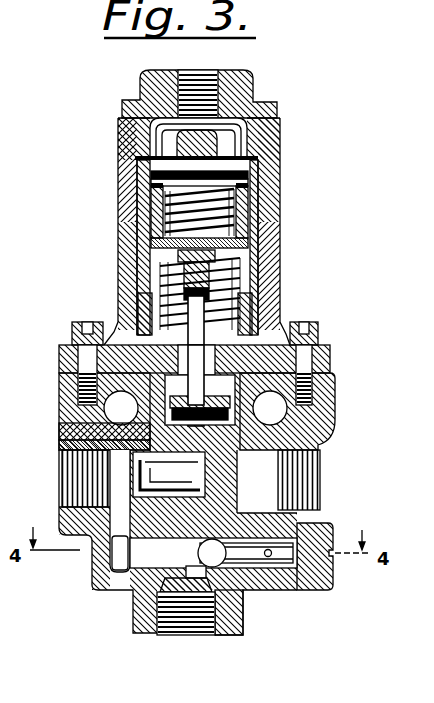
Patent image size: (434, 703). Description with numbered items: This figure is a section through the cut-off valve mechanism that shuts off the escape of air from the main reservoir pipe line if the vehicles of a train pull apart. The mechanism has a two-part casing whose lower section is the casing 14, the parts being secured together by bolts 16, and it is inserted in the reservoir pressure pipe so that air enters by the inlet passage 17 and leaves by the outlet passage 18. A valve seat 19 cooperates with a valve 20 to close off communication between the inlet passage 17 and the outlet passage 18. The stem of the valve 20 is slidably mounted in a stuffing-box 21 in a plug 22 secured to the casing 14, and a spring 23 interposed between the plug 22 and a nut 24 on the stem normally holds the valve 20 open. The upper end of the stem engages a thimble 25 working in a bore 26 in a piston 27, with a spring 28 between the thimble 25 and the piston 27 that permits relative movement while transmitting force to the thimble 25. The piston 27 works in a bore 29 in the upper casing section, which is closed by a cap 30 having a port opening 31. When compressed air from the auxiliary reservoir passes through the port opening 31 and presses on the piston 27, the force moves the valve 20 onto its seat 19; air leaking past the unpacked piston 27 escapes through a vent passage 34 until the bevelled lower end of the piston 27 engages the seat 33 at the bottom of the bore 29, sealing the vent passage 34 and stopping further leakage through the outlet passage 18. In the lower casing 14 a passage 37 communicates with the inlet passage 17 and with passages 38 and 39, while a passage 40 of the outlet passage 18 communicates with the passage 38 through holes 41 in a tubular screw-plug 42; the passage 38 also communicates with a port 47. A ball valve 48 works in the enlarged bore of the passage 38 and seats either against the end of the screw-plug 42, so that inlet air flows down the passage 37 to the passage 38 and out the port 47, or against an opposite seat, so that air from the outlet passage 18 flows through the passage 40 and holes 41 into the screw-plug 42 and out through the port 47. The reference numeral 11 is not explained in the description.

The upper housing 11 is at (118, 190).
The casing 14 is at (322, 412).
The bolts 16 is at (318, 328).
The inlet passage 17 is at (82, 480).
The outlet passage 18 is at (318, 478).
The valve seat 19 is at (62, 448).
The valve 20 is at (59, 423).
The stuffing-box 21 is at (258, 312).
The plug 22 is at (328, 349).
The spring 23 is at (215, 264).
The nut 24 is at (248, 242).
The thimble 25 is at (238, 212).
The bore 26 is at (249, 224).
The piston 27 is at (249, 184).
The spring 28 is at (276, 178).
The bore 29 is at (137, 212).
The cap 30 is at (282, 120).
The port opening 31 is at (217, 100).
The seat 33 is at (150, 335).
The vent passage 34 is at (122, 330).
The passage 37 is at (115, 546).
The passage 38 is at (167, 560).
The passage 39 is at (117, 566).
The passage 40 is at (268, 520).
The holes 41 is at (278, 596).
The screw-plug 42 is at (330, 531).
The port 47 is at (172, 628).
The ball valve 48 is at (242, 612).